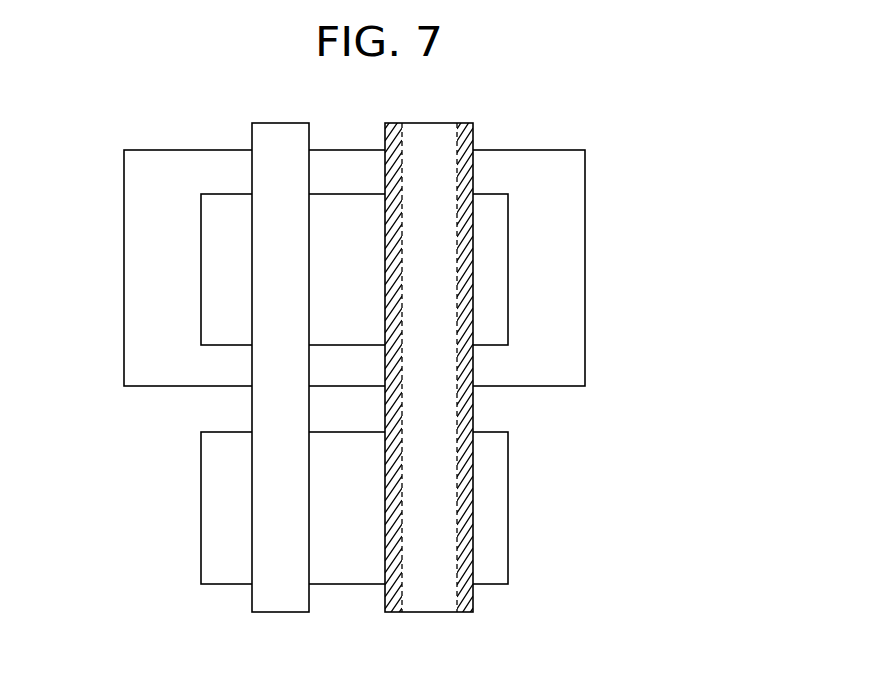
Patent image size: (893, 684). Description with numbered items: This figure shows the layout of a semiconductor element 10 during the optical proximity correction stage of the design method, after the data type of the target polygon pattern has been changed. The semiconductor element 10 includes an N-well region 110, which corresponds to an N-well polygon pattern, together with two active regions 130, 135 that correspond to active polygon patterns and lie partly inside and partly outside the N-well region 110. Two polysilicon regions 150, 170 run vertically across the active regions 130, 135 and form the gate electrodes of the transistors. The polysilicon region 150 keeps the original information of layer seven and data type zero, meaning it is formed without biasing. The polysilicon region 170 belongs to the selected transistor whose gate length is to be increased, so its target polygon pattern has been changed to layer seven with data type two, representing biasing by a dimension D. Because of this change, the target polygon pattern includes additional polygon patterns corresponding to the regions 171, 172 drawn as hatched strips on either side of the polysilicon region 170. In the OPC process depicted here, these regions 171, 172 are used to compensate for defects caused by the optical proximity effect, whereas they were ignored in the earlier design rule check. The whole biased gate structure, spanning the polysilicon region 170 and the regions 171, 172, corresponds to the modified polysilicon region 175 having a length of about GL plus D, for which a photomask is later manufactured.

The semiconductor element 10 is at (369, 108).
The N-well region 110 is at (124, 344).
The active region 130 is at (201, 268).
The active region 135 is at (201, 507).
The polysilicon region 150 is at (252, 128).
The polysilicon region 170 is at (457, 618).
The region corresponding to additional polygon pattern 171 is at (402, 618).
The region corresponding to additional polygon pattern 172 is at (473, 618).
The modified polysilicon region 175 is at (427, 368).